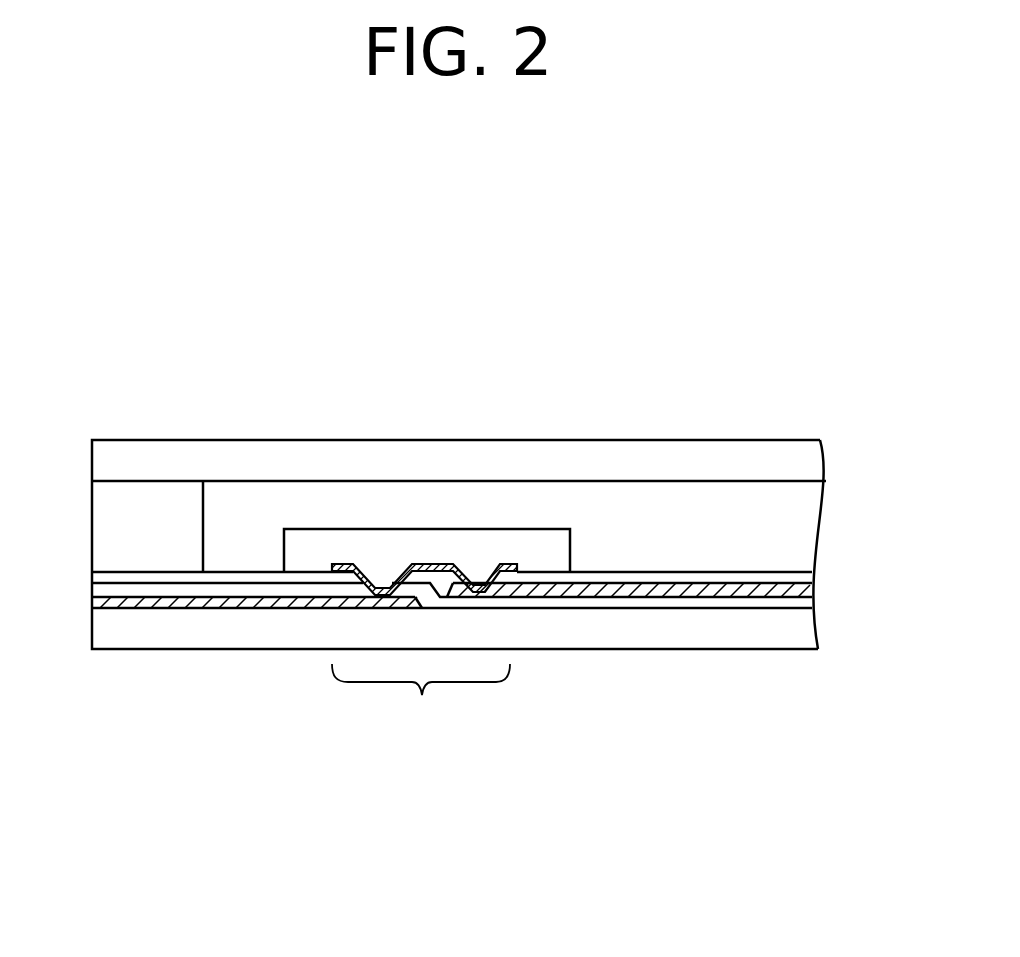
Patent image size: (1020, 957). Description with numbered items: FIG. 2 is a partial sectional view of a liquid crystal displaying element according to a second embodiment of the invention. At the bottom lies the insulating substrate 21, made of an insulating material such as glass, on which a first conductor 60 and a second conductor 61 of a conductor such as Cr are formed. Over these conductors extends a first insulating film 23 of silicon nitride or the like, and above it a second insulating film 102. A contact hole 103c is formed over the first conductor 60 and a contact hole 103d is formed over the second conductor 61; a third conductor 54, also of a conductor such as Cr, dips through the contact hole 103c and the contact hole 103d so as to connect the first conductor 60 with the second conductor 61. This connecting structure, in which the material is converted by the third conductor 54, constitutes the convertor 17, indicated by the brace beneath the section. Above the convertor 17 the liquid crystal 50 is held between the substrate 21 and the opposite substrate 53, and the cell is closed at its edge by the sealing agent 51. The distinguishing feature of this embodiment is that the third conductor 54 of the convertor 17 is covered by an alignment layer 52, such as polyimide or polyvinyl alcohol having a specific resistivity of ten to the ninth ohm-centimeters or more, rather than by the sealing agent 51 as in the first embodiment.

The convertor 17 is at (422, 696).
The insulating substrate 21 is at (222, 636).
The first insulating film 23 is at (550, 608).
The liquid crystal 50 is at (331, 508).
The sealing agent 51 is at (124, 508).
The alignment layer 52 is at (532, 542).
The opposite substrate 53 is at (239, 456).
The third conductor 54 is at (457, 567).
The first conductor 60 is at (299, 603).
The second conductor 61 is at (745, 592).
The second insulating film 102 is at (148, 580).
The contact hole 103c is at (378, 570).
The contact hole 103d is at (483, 557).